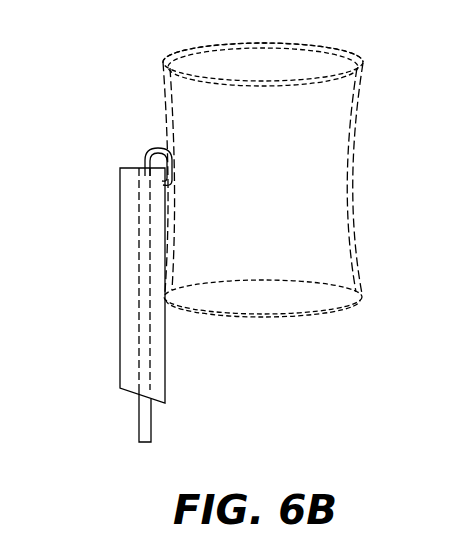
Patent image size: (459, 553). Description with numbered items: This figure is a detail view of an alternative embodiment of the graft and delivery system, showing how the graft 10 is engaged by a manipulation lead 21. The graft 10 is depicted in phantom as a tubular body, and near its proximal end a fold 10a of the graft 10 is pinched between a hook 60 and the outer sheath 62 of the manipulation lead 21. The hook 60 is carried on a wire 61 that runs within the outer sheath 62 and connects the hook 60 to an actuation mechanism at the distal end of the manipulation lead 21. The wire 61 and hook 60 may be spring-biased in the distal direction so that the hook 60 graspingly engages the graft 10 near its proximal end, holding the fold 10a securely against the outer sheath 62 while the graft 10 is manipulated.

The graft 10 is at (278, 216).
The fold 10a is at (178, 175).
The manipulation lead 21 is at (92, 292).
The hook 60 is at (148, 152).
The wire 61 is at (143, 421).
The outer sheath 62 is at (120, 243).